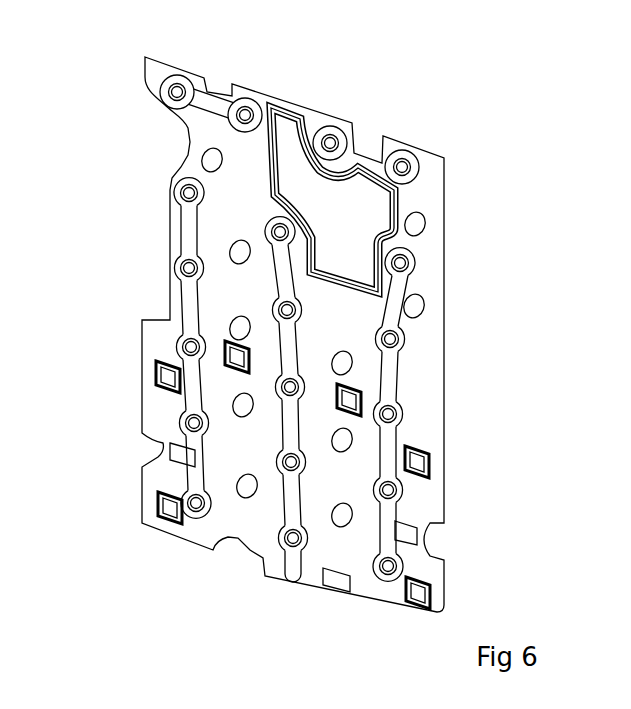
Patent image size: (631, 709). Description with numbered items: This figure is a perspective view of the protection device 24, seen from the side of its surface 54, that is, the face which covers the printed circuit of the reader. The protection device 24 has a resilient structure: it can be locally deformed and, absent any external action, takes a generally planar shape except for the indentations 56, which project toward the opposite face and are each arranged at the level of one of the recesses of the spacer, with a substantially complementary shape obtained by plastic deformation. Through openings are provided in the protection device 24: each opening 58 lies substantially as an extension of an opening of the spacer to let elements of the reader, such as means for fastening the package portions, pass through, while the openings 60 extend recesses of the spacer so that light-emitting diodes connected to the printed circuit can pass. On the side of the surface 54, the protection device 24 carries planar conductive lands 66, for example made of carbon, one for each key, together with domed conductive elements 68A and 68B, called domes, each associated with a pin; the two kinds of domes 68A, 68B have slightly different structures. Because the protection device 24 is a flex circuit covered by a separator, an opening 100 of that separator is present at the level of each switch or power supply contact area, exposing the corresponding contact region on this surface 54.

The protection device 24 is at (317, 102).
The surface of protection device covering printed circuit 54 is at (433, 178).
The indentations 56 is at (289, 135).
The openings 58 is at (235, 326).
The openings 60 is at (164, 448).
The planar conductive lands 66 is at (176, 88).
The domed conductive elements 68A is at (208, 156).
The domed conductive elements 68B is at (238, 252).
The opening 100 is at (178, 78).